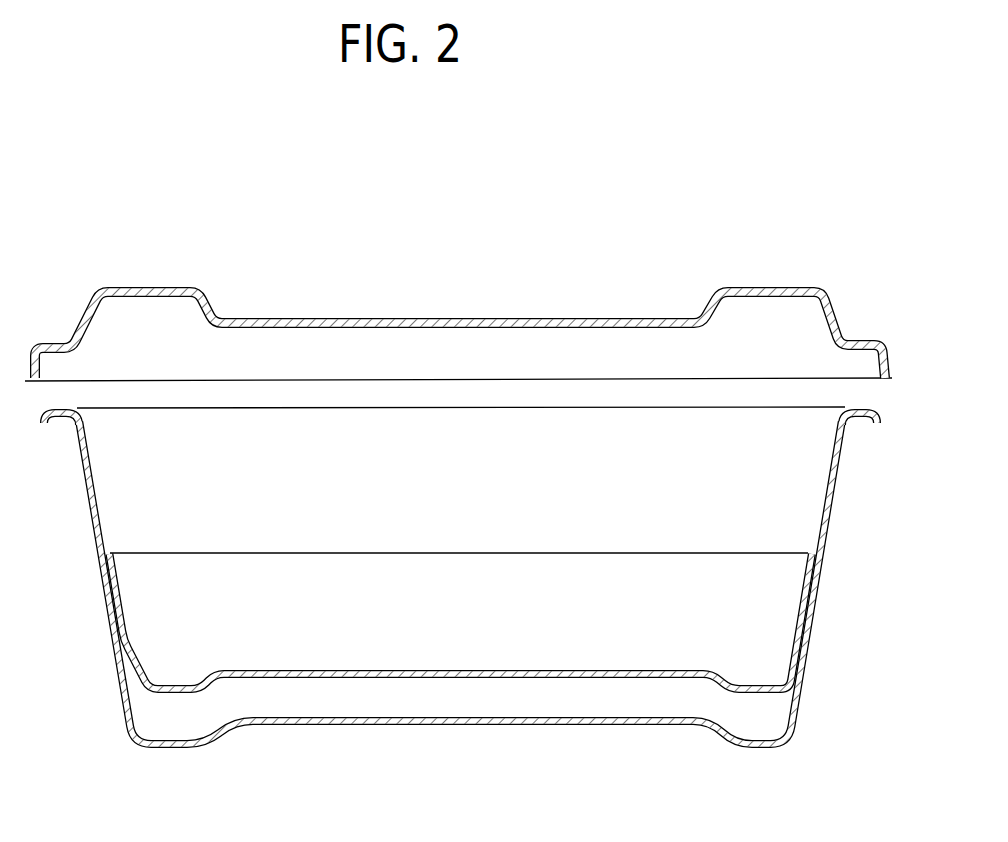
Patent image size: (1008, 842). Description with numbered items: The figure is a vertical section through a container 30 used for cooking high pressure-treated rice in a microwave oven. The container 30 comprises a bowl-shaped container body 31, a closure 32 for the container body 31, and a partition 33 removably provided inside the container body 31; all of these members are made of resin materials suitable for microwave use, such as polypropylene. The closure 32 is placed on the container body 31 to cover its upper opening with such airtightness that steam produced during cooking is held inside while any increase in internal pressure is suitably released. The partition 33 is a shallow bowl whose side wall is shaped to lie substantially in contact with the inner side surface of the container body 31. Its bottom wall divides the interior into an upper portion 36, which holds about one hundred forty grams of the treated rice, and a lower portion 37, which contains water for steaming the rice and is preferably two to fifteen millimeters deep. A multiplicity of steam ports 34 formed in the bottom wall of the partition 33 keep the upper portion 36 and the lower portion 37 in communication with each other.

The container 30 is at (782, 208).
The container body 31 is at (838, 475).
The closure 32 is at (782, 283).
The partition 33 is at (706, 668).
The steam ports 34 is at (609, 668).
The upper portion 36 is at (412, 543).
The lower portion 37 is at (432, 711).